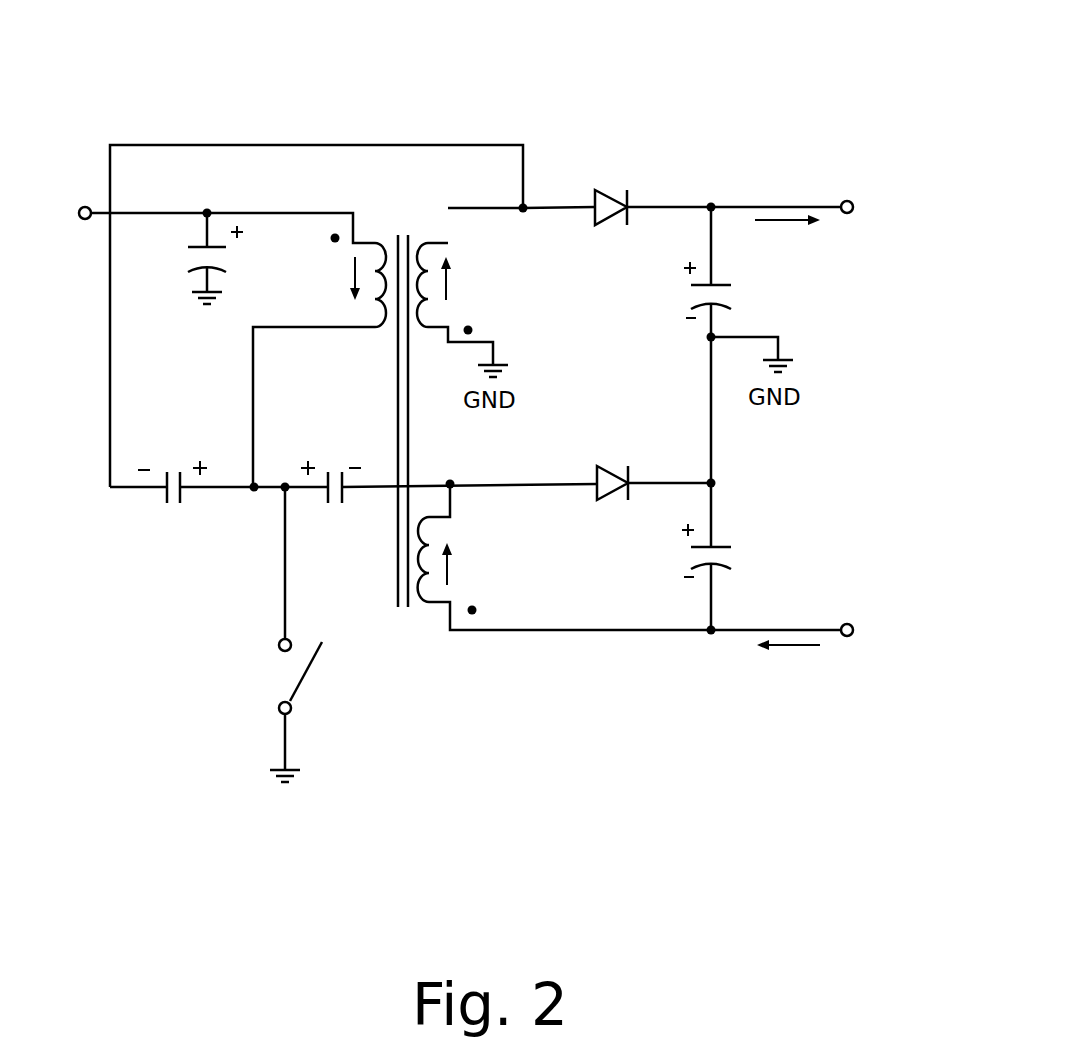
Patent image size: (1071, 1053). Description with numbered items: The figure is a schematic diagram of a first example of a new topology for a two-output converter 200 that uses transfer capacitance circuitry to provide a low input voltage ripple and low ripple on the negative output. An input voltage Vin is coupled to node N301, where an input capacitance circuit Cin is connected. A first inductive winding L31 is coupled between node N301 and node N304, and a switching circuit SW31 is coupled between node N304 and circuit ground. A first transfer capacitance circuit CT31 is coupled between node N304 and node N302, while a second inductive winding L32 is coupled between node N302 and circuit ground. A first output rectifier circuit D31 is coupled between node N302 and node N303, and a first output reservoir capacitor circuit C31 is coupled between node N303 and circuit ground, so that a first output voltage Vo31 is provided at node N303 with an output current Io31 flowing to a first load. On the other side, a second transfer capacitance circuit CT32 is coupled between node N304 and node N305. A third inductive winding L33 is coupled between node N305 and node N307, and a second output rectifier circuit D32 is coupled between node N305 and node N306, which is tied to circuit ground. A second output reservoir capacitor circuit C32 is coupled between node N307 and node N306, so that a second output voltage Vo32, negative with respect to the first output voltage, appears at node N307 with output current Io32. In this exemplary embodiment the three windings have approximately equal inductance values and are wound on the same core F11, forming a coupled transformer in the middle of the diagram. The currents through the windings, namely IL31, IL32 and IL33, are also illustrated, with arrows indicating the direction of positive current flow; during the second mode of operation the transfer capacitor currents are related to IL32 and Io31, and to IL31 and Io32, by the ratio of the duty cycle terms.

The two-output converter 200 is at (664, 62).
The input voltage Vin is at (60, 213).
The node N301 is at (313, 207).
The input capacitance circuit Cin is at (188, 257).
The first inductive winding L31 is at (377, 319).
The current signal IL31 is at (324, 278).
The core F11 is at (403, 612).
The second inductive winding L32 is at (428, 305).
The current signal IL32 is at (475, 278).
The node N302 is at (522, 207).
The first output rectifier circuit D31 is at (598, 190).
The node N303 is at (710, 207).
The first output voltage Vo31 is at (893, 207).
The output current signal Io31 is at (787, 237).
The first output reservoir capacitor circuit C31 is at (735, 293).
The first transfer capacitance circuit CT31 is at (174, 468).
The second transfer capacitance circuit CT32 is at (333, 468).
The node N304 is at (270, 495).
The switching circuit SW31 is at (283, 677).
The node N305 is at (450, 483).
The third inductive winding L33 is at (430, 524).
The current signal IL33 is at (476, 564).
The second output rectifier circuit D32 is at (607, 465).
The node N306 is at (712, 482).
The second output reservoir capacitor circuit C32 is at (737, 555).
The node N307 is at (712, 640).
The second output voltage Vo32 is at (887, 628).
The output current signal Io32 is at (788, 662).